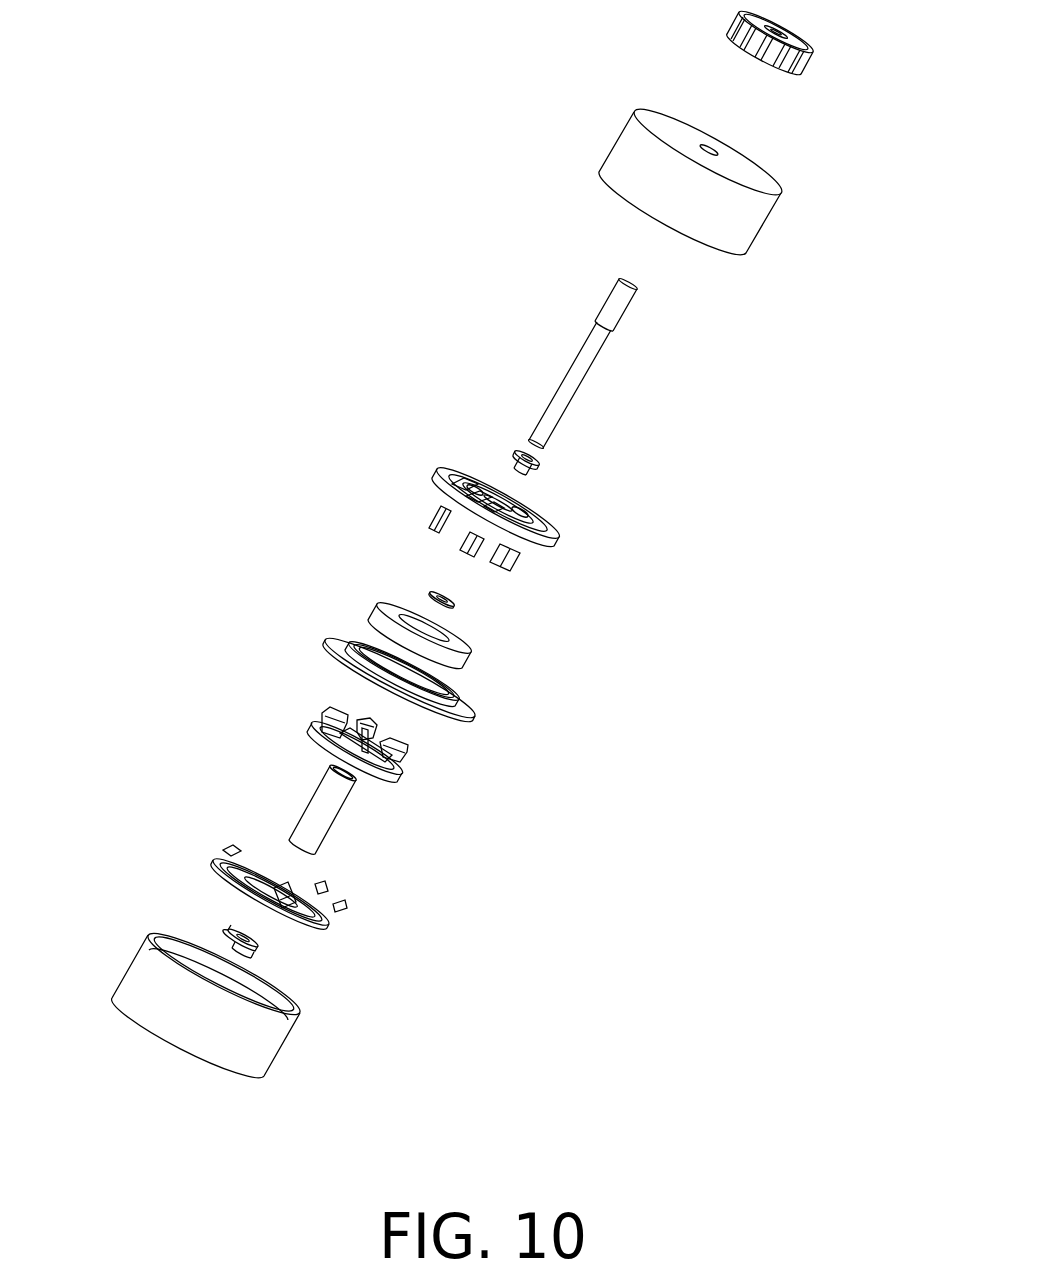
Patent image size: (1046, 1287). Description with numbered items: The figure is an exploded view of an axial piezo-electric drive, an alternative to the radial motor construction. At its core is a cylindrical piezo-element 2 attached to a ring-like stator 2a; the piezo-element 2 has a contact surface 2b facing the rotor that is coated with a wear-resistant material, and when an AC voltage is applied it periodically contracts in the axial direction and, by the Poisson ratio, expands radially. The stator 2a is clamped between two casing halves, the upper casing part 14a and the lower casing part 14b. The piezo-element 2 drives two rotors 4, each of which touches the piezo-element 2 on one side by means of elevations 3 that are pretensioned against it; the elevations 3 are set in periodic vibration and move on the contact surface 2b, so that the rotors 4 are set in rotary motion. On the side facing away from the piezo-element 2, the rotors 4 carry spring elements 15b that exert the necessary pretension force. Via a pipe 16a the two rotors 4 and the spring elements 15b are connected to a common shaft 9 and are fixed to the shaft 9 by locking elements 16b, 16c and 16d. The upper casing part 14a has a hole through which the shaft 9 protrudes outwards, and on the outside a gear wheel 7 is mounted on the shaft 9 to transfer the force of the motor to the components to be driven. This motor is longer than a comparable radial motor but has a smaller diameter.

The gear wheel 7 is at (806, 60).
The upper casing part 14a is at (635, 179).
The shaft 9 is at (613, 311).
The locking element 16d is at (510, 462).
The spring element 15b is at (548, 523).
The elevation 3 is at (437, 525).
The rotor 4 is at (440, 510).
The locking element 16c is at (455, 605).
The piezo-element 2 is at (445, 661).
The contact surface 2b is at (476, 650).
The stator 2a is at (472, 716).
The pipe 16a is at (310, 835).
The locking element 16b is at (232, 932).
The lower casing part 14b is at (250, 1048).